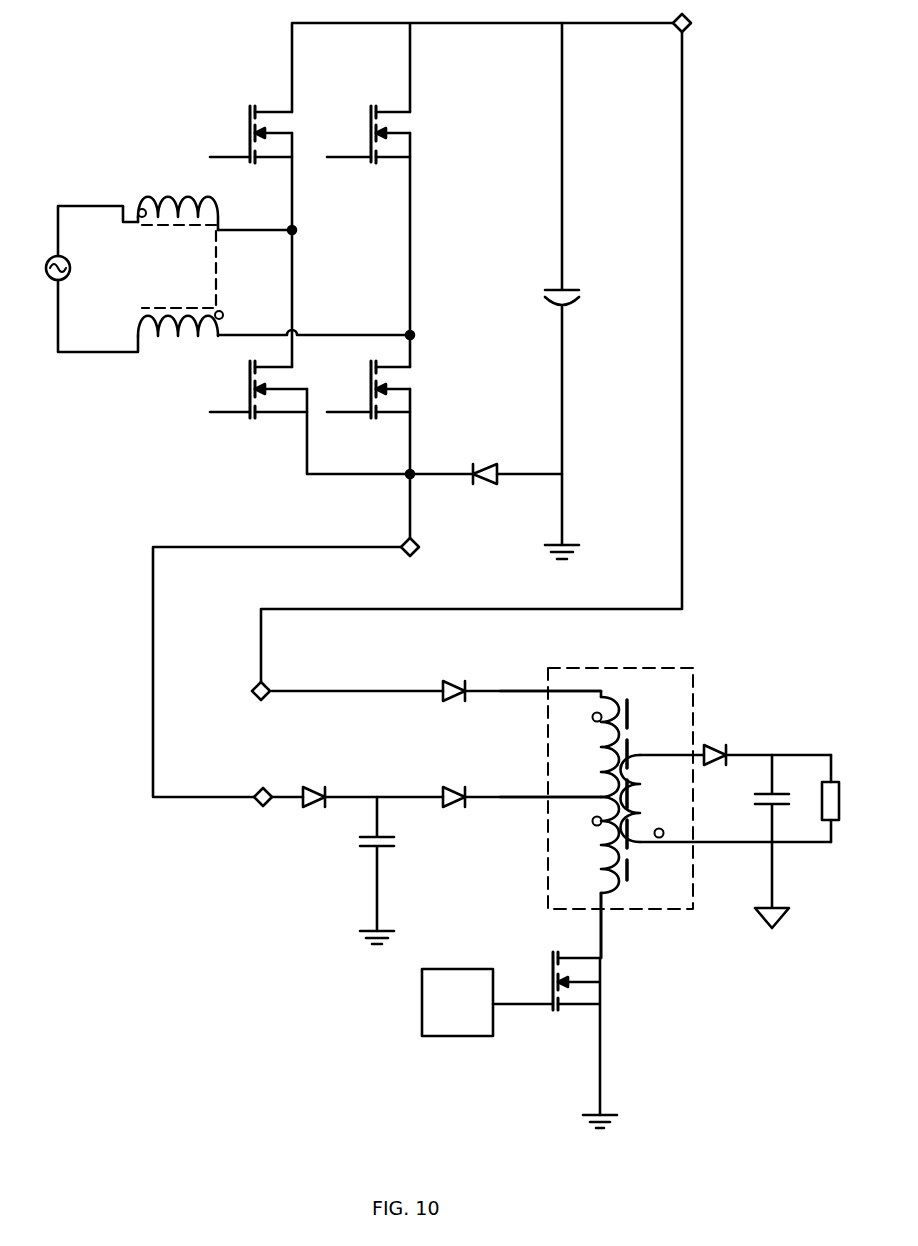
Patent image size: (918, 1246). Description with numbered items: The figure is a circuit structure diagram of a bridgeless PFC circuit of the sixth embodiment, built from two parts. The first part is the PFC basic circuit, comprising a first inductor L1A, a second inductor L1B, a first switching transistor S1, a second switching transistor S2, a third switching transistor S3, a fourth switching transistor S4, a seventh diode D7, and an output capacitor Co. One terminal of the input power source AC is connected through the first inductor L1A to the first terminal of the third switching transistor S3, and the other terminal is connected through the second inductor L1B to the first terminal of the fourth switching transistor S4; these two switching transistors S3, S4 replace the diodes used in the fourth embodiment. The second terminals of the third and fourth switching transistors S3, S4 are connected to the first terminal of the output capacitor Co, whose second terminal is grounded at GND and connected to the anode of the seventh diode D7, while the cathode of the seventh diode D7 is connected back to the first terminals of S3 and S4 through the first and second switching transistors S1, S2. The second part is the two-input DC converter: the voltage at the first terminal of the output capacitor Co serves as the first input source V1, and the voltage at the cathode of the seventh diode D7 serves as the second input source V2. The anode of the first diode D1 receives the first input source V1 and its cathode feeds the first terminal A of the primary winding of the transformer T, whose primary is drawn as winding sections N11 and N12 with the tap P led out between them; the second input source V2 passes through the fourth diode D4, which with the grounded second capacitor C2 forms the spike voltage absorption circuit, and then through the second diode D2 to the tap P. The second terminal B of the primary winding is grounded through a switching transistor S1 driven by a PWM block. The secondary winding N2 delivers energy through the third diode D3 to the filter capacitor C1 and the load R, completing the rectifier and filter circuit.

The first switching transistor S1 is at (405, 738).
The second switching transistor S2 is at (390, 389).
The third switching transistor S3 is at (251, 124).
The fourth switching transistor S4 is at (389, 127).
The first inductor L1A is at (178, 237).
The second inductor L1B is at (180, 339).
The input power source AC is at (74, 279).
The output capacitor Co is at (548, 284).
The first input source V1 is at (670, 38).
The second input source V2 is at (396, 539).
The seventh diode D7 is at (486, 459).
The ground GND is at (470, 852).
The fourth diode D4 is at (315, 779).
The first diode D1 is at (456, 704).
The second diode D2 is at (456, 811).
The second capacitor C2 is at (363, 864).
The first terminal of the primary winding A is at (550, 675).
The tap P is at (550, 783).
The second terminal of the primary winding B is at (612, 925).
The transformer T is at (620, 788).
The primary winding N11 is at (585, 747).
The primary winding N12 is at (585, 845).
The secondary winding N2 is at (655, 798).
The third diode D3 is at (717, 737).
The filter capacitor C1 is at (762, 841).
The load R is at (841, 798).
The PWM controller PWM is at (457, 1002).